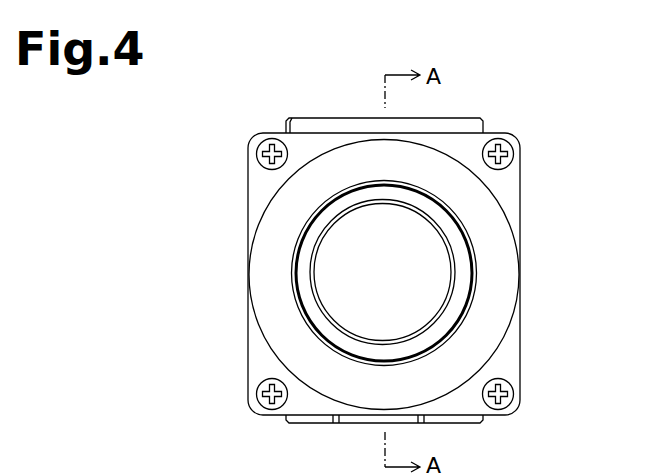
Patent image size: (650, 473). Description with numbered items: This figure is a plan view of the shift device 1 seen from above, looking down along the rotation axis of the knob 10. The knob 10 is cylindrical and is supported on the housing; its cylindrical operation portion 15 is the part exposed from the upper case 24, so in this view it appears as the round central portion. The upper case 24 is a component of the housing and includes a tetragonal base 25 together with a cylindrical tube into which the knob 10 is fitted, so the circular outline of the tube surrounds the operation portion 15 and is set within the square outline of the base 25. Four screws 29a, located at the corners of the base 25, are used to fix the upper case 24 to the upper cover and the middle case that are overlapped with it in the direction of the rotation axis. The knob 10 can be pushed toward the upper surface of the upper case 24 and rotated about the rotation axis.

The shift device 1 is at (557, 111).
The knob 10 is at (463, 277).
The operation portion 15 is at (435, 308).
The upper case 24 is at (503, 234).
The base 25 is at (510, 189).
The screws 29a is at (257, 153).